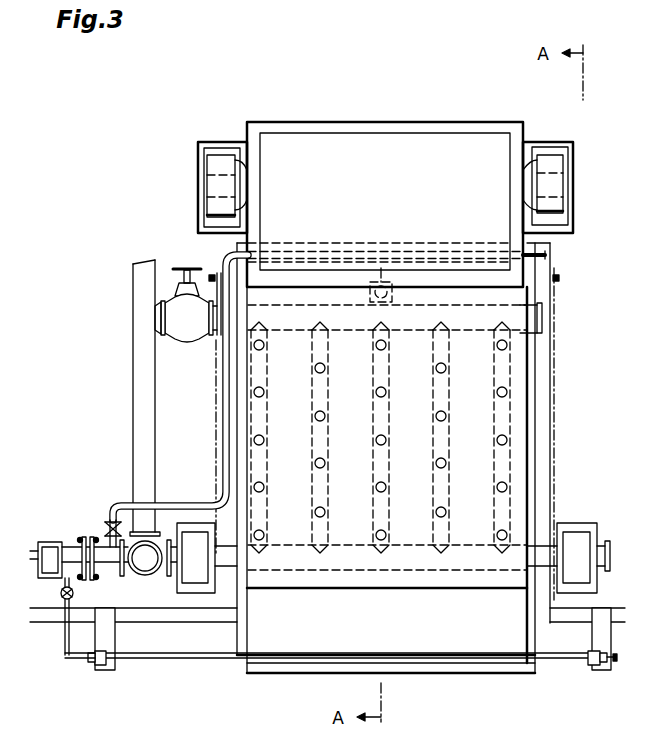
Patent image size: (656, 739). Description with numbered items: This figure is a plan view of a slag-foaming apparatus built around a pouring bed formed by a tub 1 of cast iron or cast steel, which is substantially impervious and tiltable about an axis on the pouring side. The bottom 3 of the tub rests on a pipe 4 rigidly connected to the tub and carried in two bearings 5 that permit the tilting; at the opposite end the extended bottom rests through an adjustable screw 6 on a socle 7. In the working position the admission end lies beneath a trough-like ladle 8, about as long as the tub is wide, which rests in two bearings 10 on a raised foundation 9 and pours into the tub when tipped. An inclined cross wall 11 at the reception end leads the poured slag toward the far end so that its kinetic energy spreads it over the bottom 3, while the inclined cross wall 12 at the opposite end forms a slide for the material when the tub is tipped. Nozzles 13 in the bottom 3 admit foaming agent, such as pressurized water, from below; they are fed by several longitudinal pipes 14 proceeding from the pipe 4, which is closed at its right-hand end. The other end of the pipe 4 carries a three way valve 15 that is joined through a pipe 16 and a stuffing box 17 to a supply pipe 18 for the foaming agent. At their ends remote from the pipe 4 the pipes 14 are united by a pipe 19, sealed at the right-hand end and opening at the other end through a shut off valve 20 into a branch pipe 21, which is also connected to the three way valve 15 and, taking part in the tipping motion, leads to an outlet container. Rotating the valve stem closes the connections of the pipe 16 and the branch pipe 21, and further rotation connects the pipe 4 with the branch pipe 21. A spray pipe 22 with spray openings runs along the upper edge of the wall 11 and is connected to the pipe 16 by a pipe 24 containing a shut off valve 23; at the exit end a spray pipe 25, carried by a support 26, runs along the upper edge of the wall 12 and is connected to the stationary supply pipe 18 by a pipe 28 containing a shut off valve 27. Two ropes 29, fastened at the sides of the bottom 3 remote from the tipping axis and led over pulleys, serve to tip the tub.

The tub 1 is at (528, 450).
The bottom 3 is at (387, 437).
The pipe 4 is at (402, 588).
The bearings 5 is at (197, 583).
The adjustable screw 6 is at (370, 292).
The socle 7 is at (393, 292).
The trough-like ladle 8 is at (392, 130).
The raised foundation 9 is at (198, 143).
The bearings 10 is at (207, 213).
The cross wall 11 is at (408, 243).
The cross wall 12 is at (455, 673).
The nozzles 13 is at (264, 392).
The pipes 14 is at (269, 418).
The three way valve 15 is at (145, 576).
The pipe 16 is at (110, 565).
The stuffing box 17 is at (88, 537).
The supply pipe 18 is at (42, 541).
The pipe 19 is at (411, 331).
The shut off valve 20 is at (195, 335).
The branch pipe 21 is at (133, 375).
The spray pipe 22 is at (546, 256).
The shut off valve 23 is at (113, 518).
The pipe 24 is at (192, 500).
The spray pipe 25 is at (237, 666).
The support 26 is at (100, 670).
The shut off valve 27 is at (61, 593).
The pipe 28 is at (64, 637).
The ropes 29 is at (216, 403).